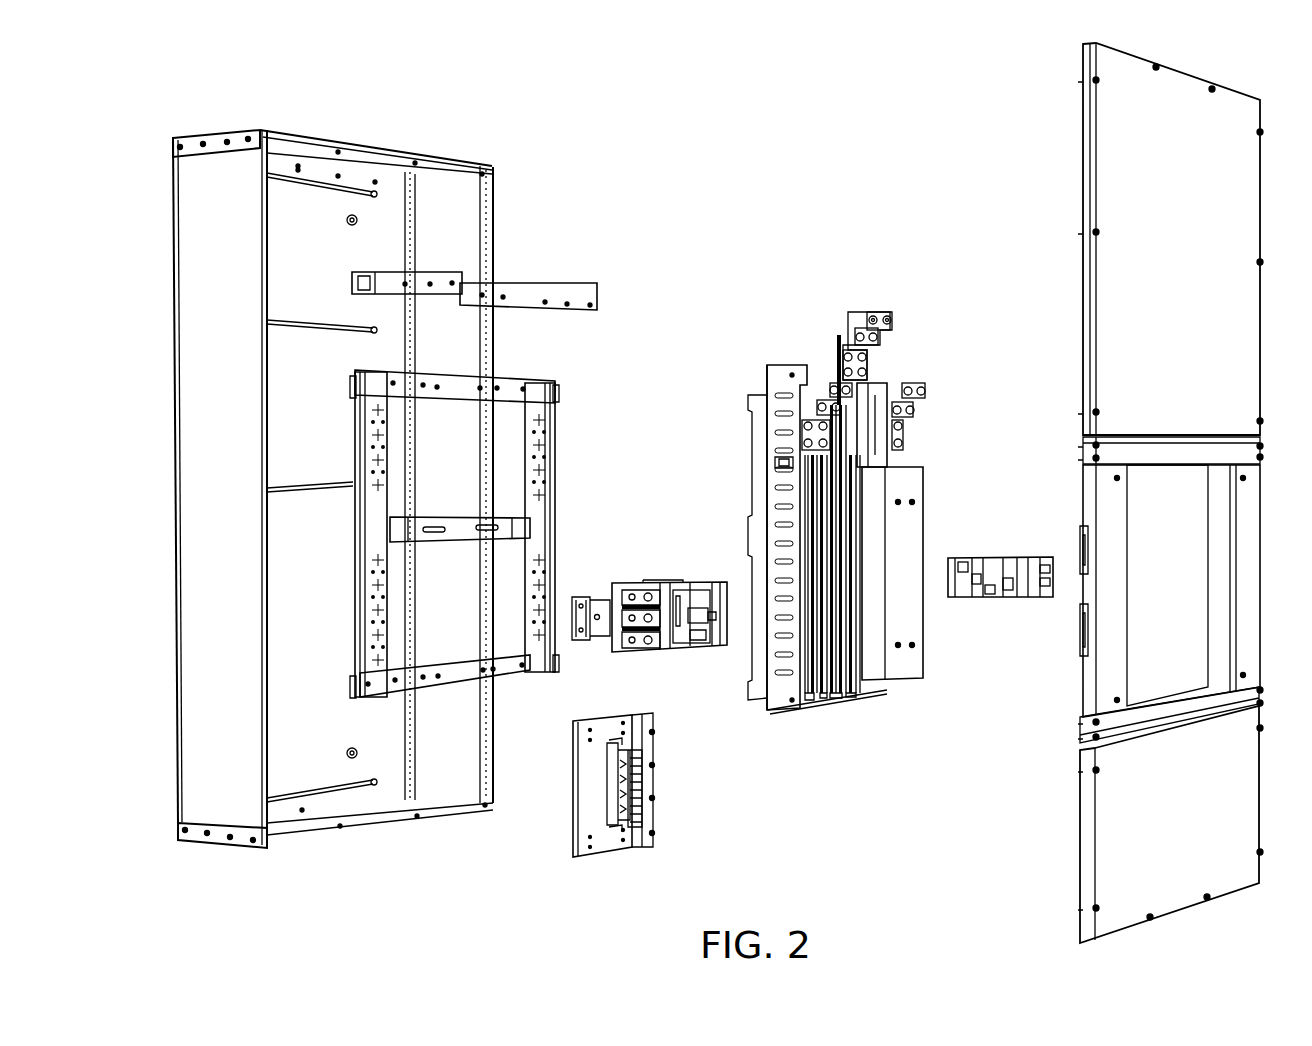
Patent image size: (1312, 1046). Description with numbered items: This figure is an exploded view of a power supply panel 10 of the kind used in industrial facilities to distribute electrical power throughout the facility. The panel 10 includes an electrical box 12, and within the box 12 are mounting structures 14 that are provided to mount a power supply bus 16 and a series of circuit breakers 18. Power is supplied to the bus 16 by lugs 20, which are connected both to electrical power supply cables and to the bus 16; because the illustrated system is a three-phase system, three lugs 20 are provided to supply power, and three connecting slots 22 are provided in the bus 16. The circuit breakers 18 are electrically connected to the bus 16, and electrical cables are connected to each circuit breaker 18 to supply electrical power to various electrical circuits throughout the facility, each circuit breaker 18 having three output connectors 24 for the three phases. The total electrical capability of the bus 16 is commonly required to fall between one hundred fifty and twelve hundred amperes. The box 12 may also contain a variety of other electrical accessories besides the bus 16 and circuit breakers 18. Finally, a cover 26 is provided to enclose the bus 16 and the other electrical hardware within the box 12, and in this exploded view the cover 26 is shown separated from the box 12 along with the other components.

The power supply panel 10 is at (597, 110).
The electrical box 12 is at (493, 211).
The mounting structures 14 is at (548, 422).
The power supply bus 16 is at (880, 407).
The circuit breakers 18 is at (697, 583).
The lugs 20 is at (866, 312).
The connecting slots 22 is at (818, 500).
The output connectors 24 is at (648, 588).
The cover 26 is at (1083, 215).